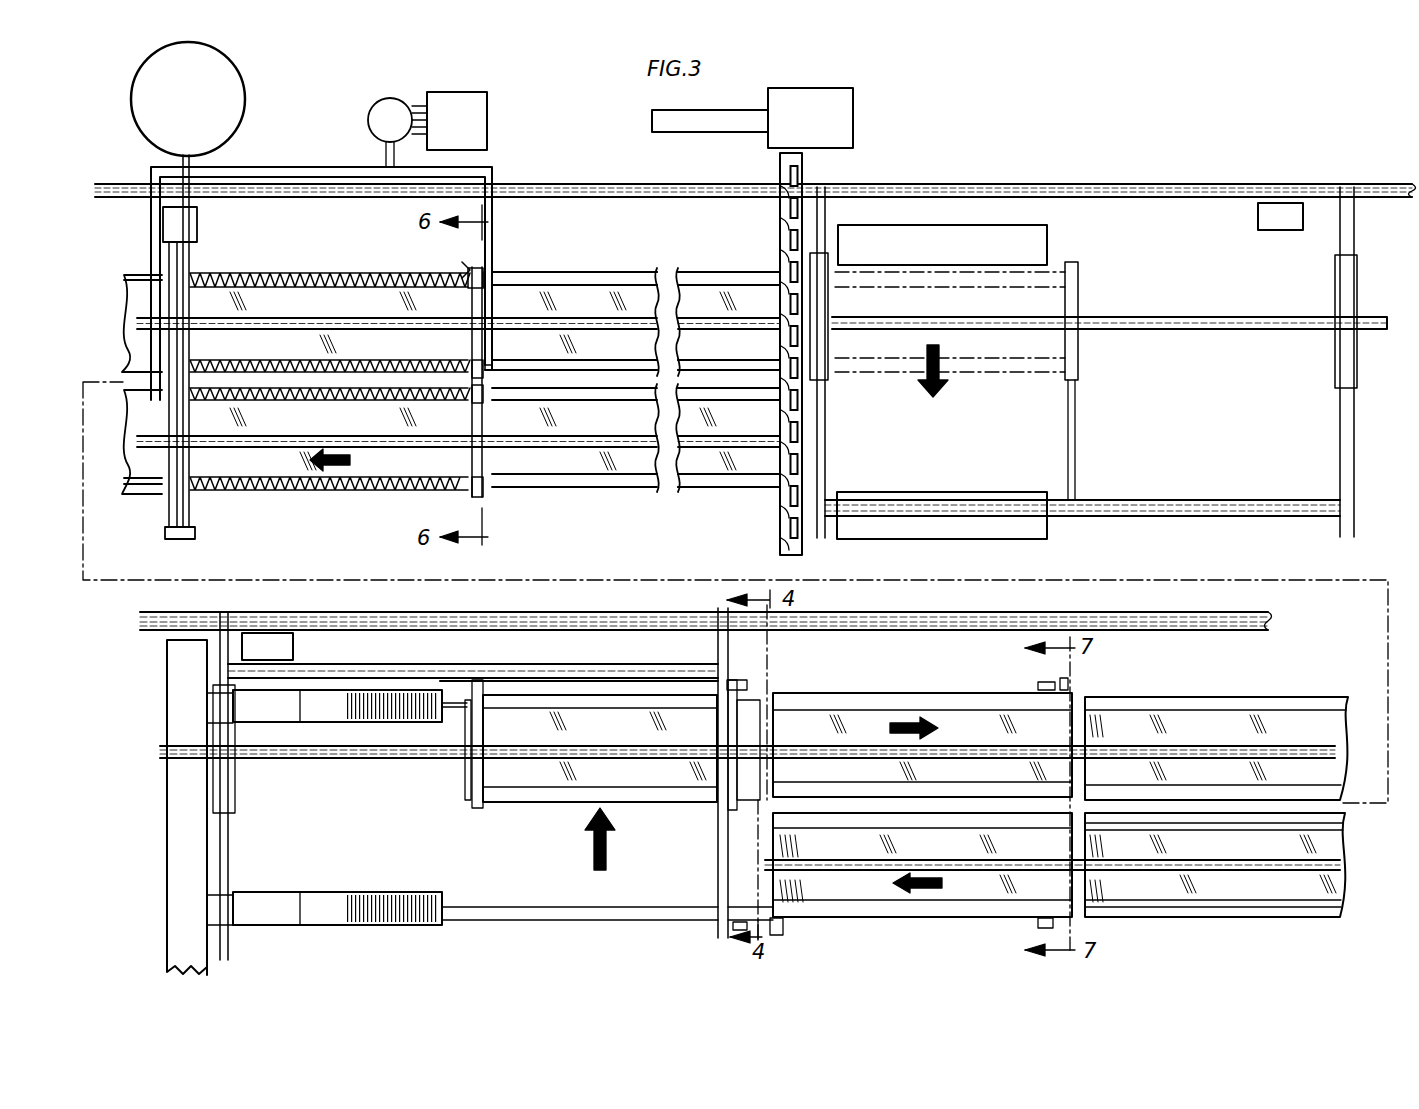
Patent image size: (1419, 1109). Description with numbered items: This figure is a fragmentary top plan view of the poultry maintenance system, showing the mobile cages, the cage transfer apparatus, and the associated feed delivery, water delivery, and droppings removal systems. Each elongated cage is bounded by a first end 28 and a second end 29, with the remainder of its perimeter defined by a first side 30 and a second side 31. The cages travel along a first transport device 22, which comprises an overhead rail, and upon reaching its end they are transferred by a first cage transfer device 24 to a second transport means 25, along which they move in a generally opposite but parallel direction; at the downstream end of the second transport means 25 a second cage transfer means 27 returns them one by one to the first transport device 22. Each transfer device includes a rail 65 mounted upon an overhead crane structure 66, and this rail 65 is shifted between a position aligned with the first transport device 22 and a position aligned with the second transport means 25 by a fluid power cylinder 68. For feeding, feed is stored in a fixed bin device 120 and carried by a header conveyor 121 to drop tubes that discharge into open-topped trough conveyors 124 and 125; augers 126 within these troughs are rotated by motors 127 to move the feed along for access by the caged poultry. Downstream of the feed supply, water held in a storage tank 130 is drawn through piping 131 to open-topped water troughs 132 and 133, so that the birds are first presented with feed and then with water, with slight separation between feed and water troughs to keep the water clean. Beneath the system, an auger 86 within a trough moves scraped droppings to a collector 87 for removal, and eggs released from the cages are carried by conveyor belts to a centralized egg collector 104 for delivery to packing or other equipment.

The fixed bin device 120 is at (223, 80).
The header conveyor 121 is at (190, 187).
The storage tank 130 is at (406, 107).
The trough conveyor 124 is at (262, 367).
The trough conveyor 125 is at (275, 398).
The auger 126 is at (380, 373).
The first transport device 22 is at (340, 323).
The motor 127 is at (478, 270).
The first end 28 is at (470, 277).
The second end 29 is at (477, 278).
The piping 131 is at (497, 313).
The water trough 132 is at (600, 282).
The water trough 133 is at (612, 363).
The second side 31 is at (697, 287).
The first side 30 is at (722, 397).
The second transport means 25 is at (740, 440).
The auger 86 is at (782, 170).
The collector 87 is at (850, 140).
The first cage transfer device 24 is at (1081, 363).
The fluid power cylinder 68 is at (1073, 402).
The rail 65 is at (1240, 325).
The overhead crane structure 66 is at (1240, 495).
The centralized egg collector 104 is at (387, 700).
The second cage transfer means 27 is at (490, 803).